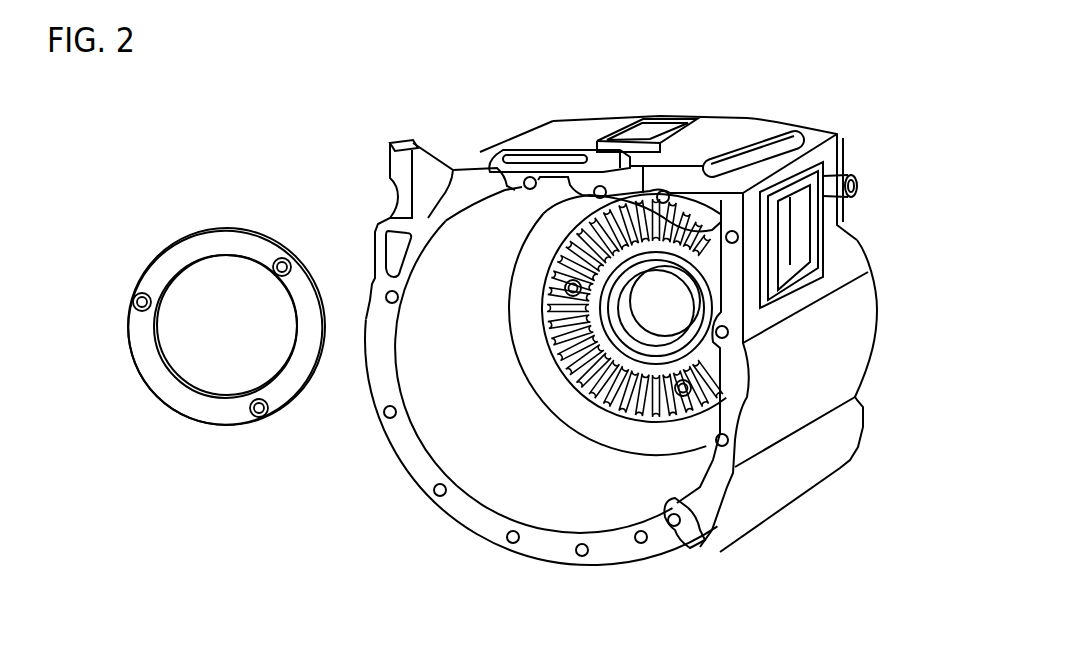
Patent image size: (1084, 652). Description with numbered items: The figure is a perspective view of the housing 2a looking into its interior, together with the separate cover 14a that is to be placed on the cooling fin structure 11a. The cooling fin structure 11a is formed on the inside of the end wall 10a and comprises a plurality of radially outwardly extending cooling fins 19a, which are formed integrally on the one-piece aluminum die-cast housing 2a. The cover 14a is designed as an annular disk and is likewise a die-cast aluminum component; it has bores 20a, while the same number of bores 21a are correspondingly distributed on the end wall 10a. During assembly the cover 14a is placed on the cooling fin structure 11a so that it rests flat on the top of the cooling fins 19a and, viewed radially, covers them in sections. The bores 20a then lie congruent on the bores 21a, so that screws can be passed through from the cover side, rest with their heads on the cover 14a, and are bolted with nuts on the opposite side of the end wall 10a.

The housing 2a is at (696, 105).
The end wall 10a is at (672, 413).
The cooling fin structure 11a is at (643, 423).
The cover 14a is at (188, 235).
The cooling fins 19a is at (572, 268).
The bores 20a is at (288, 258).
The bores 21a is at (563, 268).